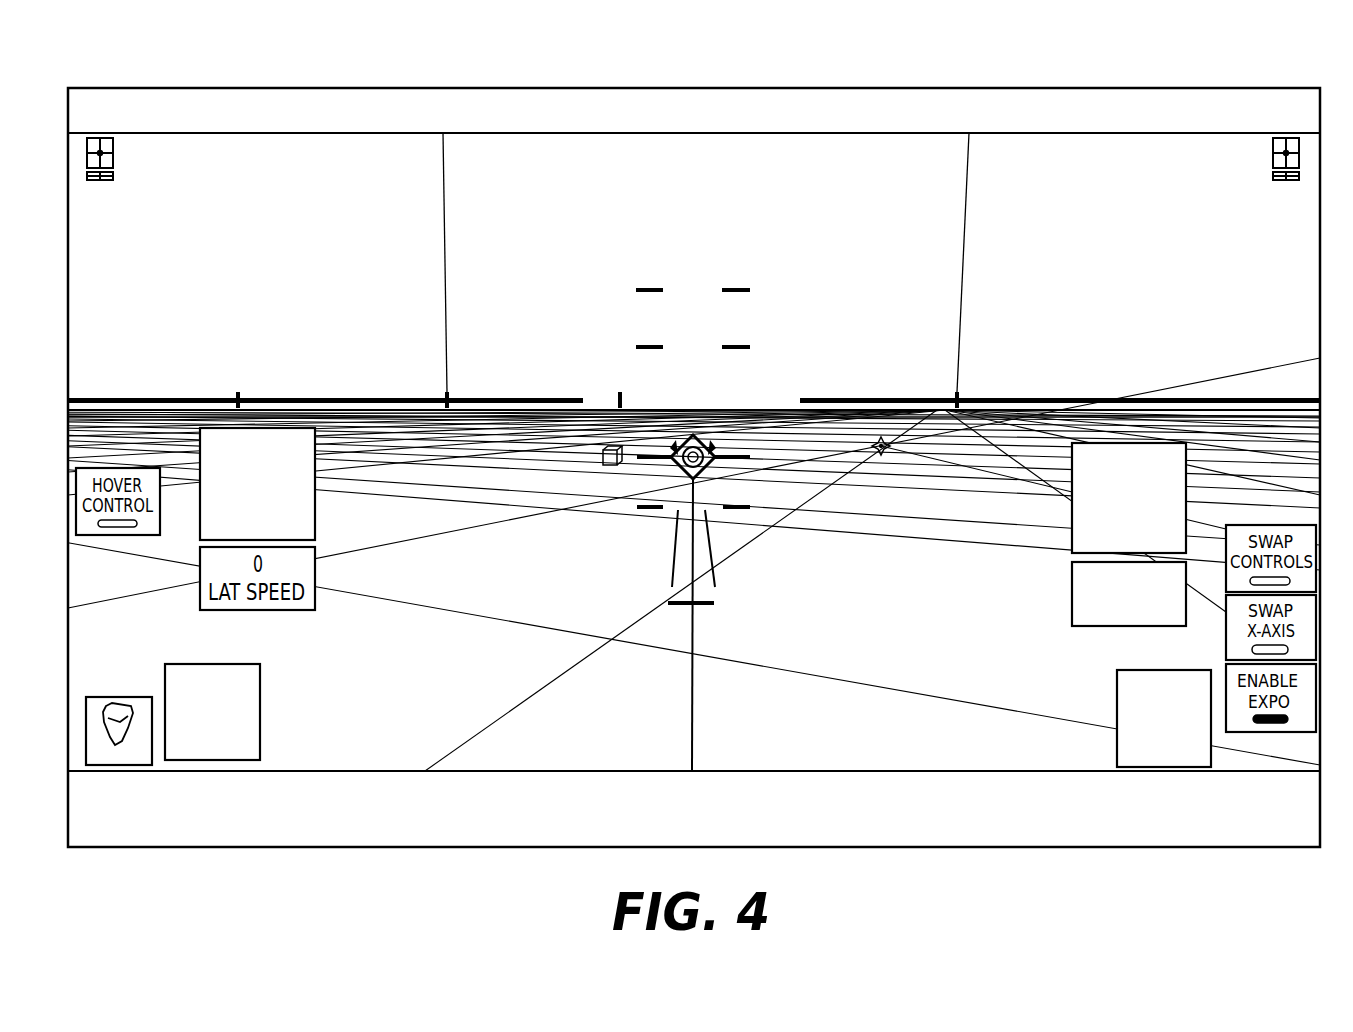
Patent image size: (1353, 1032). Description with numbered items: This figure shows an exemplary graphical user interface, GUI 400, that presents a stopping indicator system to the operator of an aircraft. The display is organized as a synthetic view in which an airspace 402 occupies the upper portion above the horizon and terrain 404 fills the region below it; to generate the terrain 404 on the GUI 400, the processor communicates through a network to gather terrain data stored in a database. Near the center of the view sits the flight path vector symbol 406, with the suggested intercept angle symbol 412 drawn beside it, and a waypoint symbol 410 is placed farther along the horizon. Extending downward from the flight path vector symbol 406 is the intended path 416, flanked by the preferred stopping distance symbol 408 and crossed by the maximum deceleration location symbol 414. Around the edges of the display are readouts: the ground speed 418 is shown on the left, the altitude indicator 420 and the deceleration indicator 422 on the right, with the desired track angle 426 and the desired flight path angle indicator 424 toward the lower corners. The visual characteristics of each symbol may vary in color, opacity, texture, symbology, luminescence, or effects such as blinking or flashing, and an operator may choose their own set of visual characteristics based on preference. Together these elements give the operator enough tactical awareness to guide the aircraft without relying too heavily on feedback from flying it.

The GUI 400 is at (128, 76).
The airspace 402 is at (338, 268).
The terrain 404 is at (518, 645).
The flight path vector symbol 406 is at (675, 440).
The preferred stopping distance symbol 408 is at (665, 550).
The waypoint symbol 410 is at (885, 452).
The suggested intercept angle symbol 412 is at (700, 470).
The maximum deceleration location symbol 414 is at (706, 612).
The intended path 416 is at (697, 723).
The ground speed 418 is at (318, 475).
The altitude indicator 420 is at (1188, 480).
The deceleration indicator 422 is at (1070, 615).
The desired flight path angle indicator 424 is at (1115, 708).
The desired track angle 426 is at (262, 690).